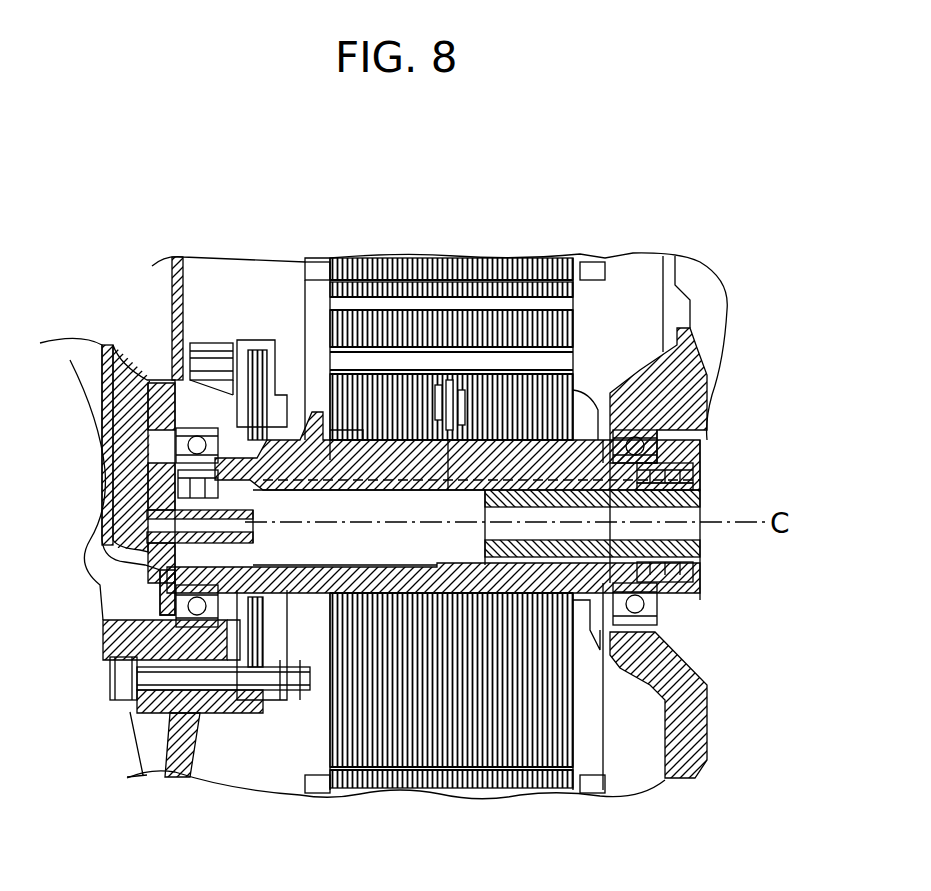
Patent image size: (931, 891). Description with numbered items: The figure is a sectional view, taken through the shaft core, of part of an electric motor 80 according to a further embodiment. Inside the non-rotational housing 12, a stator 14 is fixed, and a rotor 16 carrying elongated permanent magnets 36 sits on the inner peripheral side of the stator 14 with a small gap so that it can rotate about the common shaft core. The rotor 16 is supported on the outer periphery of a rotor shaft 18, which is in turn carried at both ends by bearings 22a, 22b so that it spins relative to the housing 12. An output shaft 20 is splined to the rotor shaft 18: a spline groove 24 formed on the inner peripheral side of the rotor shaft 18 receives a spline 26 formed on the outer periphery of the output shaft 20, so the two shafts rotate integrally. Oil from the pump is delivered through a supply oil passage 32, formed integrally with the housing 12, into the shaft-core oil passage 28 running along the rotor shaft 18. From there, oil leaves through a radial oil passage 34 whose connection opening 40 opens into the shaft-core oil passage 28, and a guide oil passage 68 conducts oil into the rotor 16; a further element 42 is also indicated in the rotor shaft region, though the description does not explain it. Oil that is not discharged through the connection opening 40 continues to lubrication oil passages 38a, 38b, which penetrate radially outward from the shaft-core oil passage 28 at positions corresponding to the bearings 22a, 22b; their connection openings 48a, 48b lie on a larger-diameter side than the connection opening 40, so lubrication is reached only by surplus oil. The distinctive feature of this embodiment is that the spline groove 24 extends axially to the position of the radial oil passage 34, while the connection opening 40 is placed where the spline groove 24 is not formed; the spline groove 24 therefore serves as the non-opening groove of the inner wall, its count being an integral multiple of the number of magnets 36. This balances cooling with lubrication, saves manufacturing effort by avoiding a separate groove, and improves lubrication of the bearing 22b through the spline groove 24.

The electric motor 80 is at (626, 220).
The housing 12 is at (175, 279).
The stator 14 is at (325, 272).
The rotor 16 is at (578, 391).
The rotor shaft 18 is at (287, 657).
The output shaft 20 is at (700, 552).
The bearing 22a is at (178, 594).
The bearing 22b is at (640, 413).
The spline groove 24 is at (655, 590).
The spline 26 is at (598, 602).
The shaft-core oil passage 28 is at (315, 541).
The supply oil passage 32 is at (110, 438).
The radial oil passage 34 is at (430, 473).
The magnet 36 is at (572, 304).
The lubrication oil passage 38a is at (193, 427).
The lubrication oil passage 38b is at (660, 447).
The connection opening 40 is at (450, 470).
The magnet 42 is at (412, 470).
The connection opening 48a is at (165, 482).
The connection opening 48b is at (680, 493).
The guide oil passage 68 is at (446, 378).